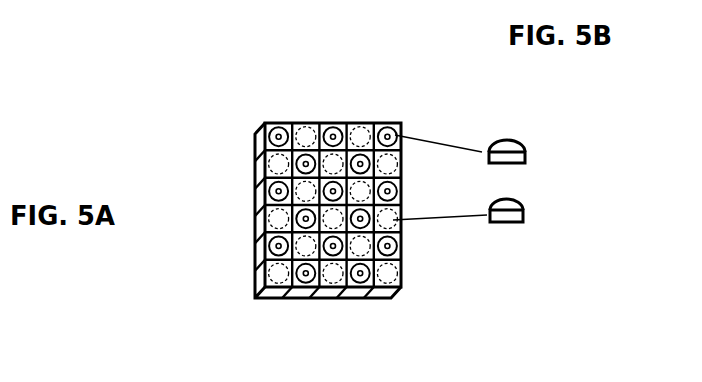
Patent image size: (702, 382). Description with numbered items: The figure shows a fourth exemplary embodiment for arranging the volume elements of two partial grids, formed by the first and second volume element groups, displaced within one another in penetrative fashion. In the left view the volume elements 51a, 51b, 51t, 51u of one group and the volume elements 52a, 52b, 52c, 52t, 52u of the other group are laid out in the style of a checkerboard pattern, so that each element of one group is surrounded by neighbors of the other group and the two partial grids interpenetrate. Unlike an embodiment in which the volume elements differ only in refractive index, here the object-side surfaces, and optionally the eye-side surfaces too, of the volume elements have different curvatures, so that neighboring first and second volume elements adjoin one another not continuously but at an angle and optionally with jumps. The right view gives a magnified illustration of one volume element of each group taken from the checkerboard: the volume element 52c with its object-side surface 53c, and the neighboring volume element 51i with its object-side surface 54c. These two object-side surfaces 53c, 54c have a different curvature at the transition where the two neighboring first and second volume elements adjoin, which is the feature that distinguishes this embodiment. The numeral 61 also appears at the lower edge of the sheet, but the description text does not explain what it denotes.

In FIG. 5A, the volume element 51a is at (284, 128).
In FIG. 5A, the volume element 51b is at (360, 127).
In FIG. 5B, the volume element 51i is at (558, 226).
In FIG. 5A, the volume element 51t is at (330, 282).
In FIG. 5A, the volume element 51u is at (390, 278).
In FIG. 5A, the volume element 52a is at (257, 138).
In FIG. 5A, the volume element 52b is at (307, 127).
In FIG. 5A, the volume element 52c is at (387, 127).
In FIG. 5B, the volume element 52c is at (558, 129).
In FIG. 5A, the volume element 52t is at (305, 282).
In FIG. 5A, the volume element 52u is at (358, 282).
In FIG. 5B, the object-side surface 53c is at (513, 141).
In FIG. 5B, the object-side surface 54c is at (513, 199).
In FIG. 5B, the substrate 61 is at (508, 374).